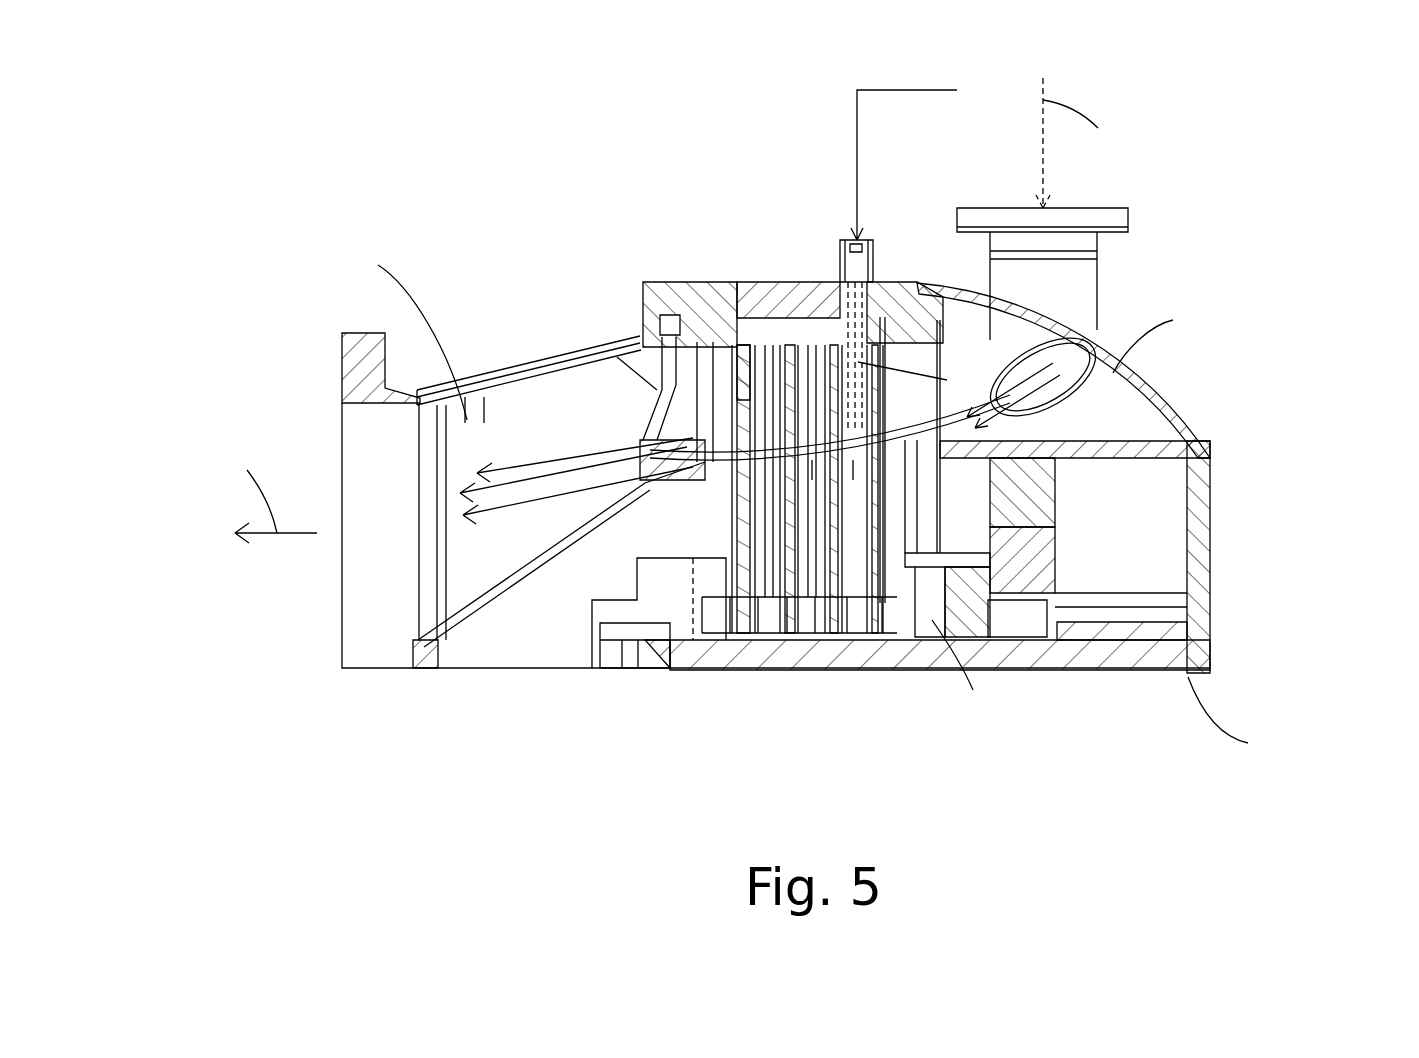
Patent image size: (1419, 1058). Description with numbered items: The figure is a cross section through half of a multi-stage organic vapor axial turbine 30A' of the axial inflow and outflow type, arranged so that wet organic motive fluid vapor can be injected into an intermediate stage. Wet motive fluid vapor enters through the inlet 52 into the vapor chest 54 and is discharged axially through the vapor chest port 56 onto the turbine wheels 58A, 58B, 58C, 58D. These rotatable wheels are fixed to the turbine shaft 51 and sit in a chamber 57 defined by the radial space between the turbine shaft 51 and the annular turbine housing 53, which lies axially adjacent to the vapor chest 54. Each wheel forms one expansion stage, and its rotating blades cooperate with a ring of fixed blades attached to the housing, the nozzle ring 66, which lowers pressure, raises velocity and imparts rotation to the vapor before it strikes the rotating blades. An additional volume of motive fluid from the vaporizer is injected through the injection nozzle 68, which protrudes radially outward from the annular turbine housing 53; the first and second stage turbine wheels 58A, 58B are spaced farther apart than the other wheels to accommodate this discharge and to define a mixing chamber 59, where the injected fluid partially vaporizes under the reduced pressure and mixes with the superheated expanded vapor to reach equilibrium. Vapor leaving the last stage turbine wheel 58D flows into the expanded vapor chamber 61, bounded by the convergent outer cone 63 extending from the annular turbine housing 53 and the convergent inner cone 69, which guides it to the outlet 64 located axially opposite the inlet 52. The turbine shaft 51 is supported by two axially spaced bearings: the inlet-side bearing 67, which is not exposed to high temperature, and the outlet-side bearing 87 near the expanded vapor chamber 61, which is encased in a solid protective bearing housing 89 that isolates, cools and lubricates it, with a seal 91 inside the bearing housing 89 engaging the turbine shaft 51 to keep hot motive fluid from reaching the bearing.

The multi-stage organic vapor axial turbine 30A' is at (776, 351).
The turbine shaft 51 is at (1193, 683).
The inlet 52 is at (1130, 212).
The annular turbine housing 53 is at (793, 293).
The vapor chest 54 is at (1140, 433).
The vapor chest port 56 is at (1047, 367).
The chamber 57 is at (848, 587).
The first stage turbine wheel 58A is at (885, 640).
The turbine wheel 58B is at (845, 640).
The turbine wheel 58C is at (800, 640).
The turbine wheel 58D is at (733, 640).
The mixing chamber 59 is at (858, 400).
The expanded vapor chamber 61 is at (487, 423).
The convergent outer cone 63 is at (497, 367).
The outlet 64 is at (350, 558).
The nozzle ring 66 is at (807, 282).
The inlet-side bearing 67 is at (1008, 627).
The injection nozzle 68 is at (871, 243).
The convergent inner cone 69 is at (527, 553).
The outlet-side bearing 87 is at (613, 663).
The bearing housing 89 is at (590, 620).
The seal 91 is at (645, 652).